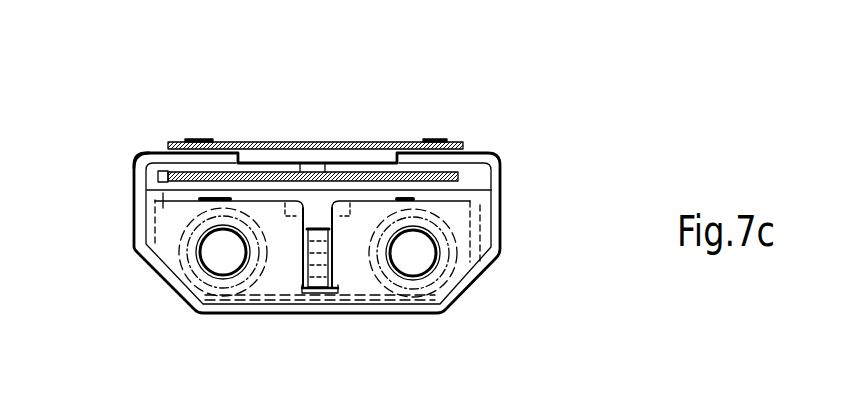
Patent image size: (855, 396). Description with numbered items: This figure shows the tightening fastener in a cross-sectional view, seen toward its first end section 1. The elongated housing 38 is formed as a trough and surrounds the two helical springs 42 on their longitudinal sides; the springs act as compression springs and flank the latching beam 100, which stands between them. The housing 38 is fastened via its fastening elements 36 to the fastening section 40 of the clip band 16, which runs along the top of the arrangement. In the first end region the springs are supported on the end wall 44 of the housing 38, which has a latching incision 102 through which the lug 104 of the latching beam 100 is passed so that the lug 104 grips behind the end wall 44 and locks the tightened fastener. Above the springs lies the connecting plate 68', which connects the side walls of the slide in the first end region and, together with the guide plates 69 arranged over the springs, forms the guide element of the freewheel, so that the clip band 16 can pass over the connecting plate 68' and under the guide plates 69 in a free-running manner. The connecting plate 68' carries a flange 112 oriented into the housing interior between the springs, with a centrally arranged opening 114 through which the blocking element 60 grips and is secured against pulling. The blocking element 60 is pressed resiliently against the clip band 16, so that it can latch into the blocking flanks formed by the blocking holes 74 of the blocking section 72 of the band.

The first end section 1 is at (462, 311).
The clip band 16 is at (471, 146).
The guide plates 69 is at (150, 150).
The fastening elements 36 is at (213, 142).
The fastening section 40 is at (393, 163).
The blocking section 72 is at (247, 172).
The blocking holes 74 is at (262, 165).
The blocking element 60 is at (311, 164).
The connecting plate 68' is at (262, 191).
The opening 114 is at (340, 216).
The flange 112 is at (362, 216).
The end wall 44 is at (451, 215).
The helical spring 42 is at (190, 254).
The latching incision 102 is at (300, 222).
The lug 104 is at (300, 298).
The latching beam 100 is at (319, 294).
The housing 38 is at (385, 313).